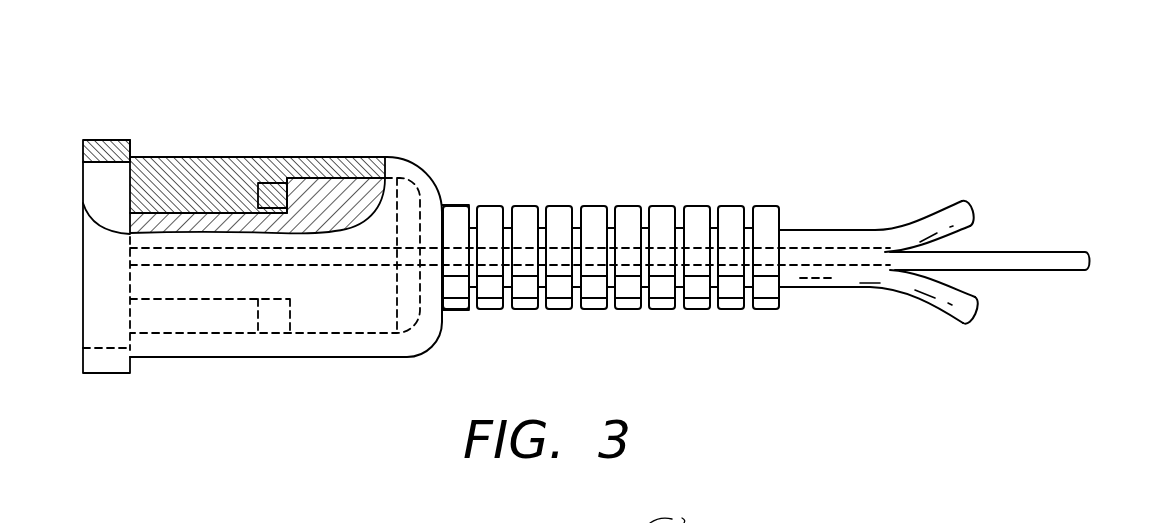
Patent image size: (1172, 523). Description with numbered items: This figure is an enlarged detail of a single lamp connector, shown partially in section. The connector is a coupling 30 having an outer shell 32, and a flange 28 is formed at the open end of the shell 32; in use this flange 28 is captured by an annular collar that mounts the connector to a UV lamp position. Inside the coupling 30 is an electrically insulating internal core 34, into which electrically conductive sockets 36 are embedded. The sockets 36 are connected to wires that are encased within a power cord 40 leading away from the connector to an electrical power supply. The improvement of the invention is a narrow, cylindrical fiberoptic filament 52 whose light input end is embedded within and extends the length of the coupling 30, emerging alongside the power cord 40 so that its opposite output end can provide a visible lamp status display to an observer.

The flange 28 is at (108, 135).
The coupling 30 is at (470, 155).
The outer shell 32 is at (433, 333).
The electrically insulating internal core 34 is at (333, 165).
The electrically conductive sockets 36 is at (219, 194).
The power cord 40 is at (843, 290).
The fiberoptic filament 52 is at (1010, 260).